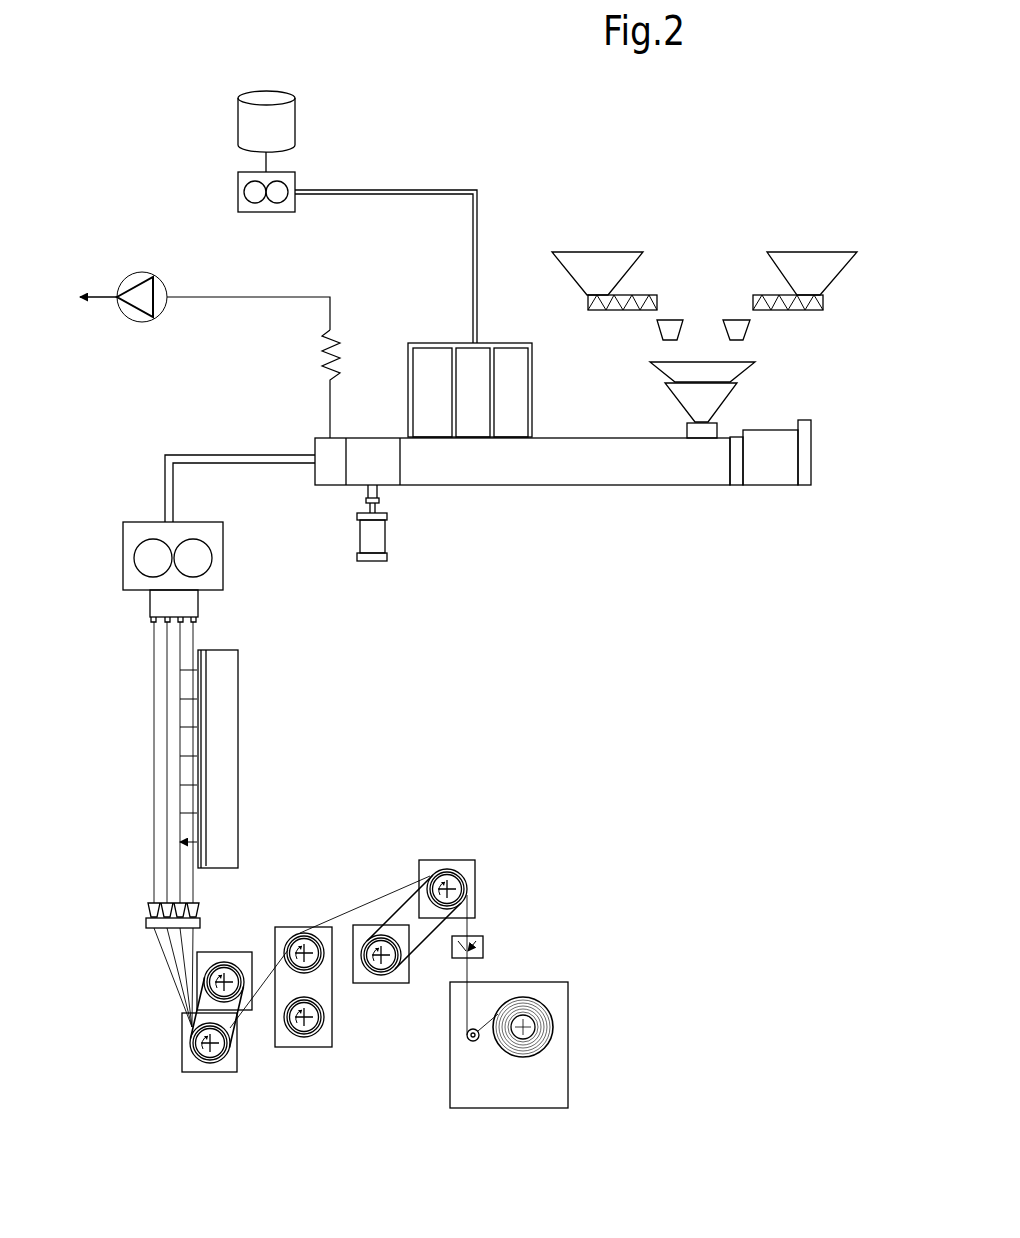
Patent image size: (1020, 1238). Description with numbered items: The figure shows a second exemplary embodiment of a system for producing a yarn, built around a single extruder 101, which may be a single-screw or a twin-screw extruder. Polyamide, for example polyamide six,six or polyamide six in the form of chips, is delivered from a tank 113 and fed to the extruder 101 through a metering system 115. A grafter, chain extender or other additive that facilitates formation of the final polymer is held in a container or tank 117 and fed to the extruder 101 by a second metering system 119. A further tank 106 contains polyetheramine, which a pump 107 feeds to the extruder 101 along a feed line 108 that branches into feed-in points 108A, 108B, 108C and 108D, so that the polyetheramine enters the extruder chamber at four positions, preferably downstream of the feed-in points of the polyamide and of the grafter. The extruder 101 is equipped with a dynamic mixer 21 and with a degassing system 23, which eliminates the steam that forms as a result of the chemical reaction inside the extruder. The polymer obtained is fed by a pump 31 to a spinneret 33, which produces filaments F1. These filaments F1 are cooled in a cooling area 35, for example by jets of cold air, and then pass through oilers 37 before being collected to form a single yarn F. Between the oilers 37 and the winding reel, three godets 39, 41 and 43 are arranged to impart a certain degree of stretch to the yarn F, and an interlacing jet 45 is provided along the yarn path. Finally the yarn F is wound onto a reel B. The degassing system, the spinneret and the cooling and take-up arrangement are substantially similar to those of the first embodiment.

The tank 106 is at (252, 128).
The pump 107 is at (238, 202).
The feed line 108 is at (340, 194).
The mixing unit 108A is at (408, 405).
The mixing section 108B is at (450, 372).
The mixing section 108C is at (495, 372).
The mixing section 108D is at (533, 403).
The degassing system 23 is at (297, 325).
The extruder 101 is at (628, 495).
The dynamic mixer 21 is at (378, 542).
The tank 117 is at (607, 247).
The tank 113 is at (824, 247).
The metering system 119 is at (653, 325).
The metering system 115 is at (752, 330).
The pump 31 is at (147, 512).
The spinneret 33 is at (162, 598).
The filaments F1 is at (180, 623).
The cooling area 35 is at (246, 760).
The oilers 37 is at (200, 922).
The godet 39 is at (214, 1085).
The godet 41 is at (310, 1056).
The godet 43 is at (369, 990).
The yarn F is at (375, 905).
The interlacing jet 45 is at (484, 946).
The reel B is at (553, 1023).